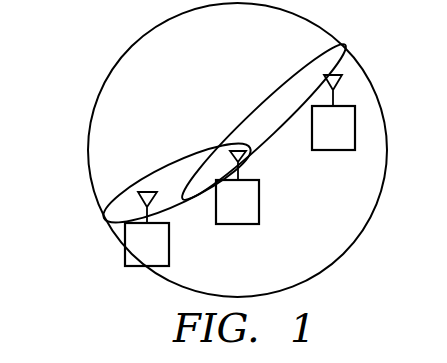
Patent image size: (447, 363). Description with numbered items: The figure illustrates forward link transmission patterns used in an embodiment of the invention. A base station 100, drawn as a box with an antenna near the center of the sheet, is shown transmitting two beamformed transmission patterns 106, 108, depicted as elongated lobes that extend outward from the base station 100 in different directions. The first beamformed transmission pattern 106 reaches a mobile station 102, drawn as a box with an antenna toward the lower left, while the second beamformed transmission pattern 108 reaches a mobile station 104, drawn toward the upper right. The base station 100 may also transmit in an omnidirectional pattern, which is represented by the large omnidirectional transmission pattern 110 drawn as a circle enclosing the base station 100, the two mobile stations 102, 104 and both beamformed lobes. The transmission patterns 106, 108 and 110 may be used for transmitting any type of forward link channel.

The base station 100 is at (259, 207).
The mobile station 102 is at (170, 243).
The mobile station 104 is at (333, 151).
The beamformed transmission pattern 106 is at (167, 166).
The beamformed transmission pattern 108 is at (277, 90).
The omnidirectional transmission pattern 110 is at (89, 150).